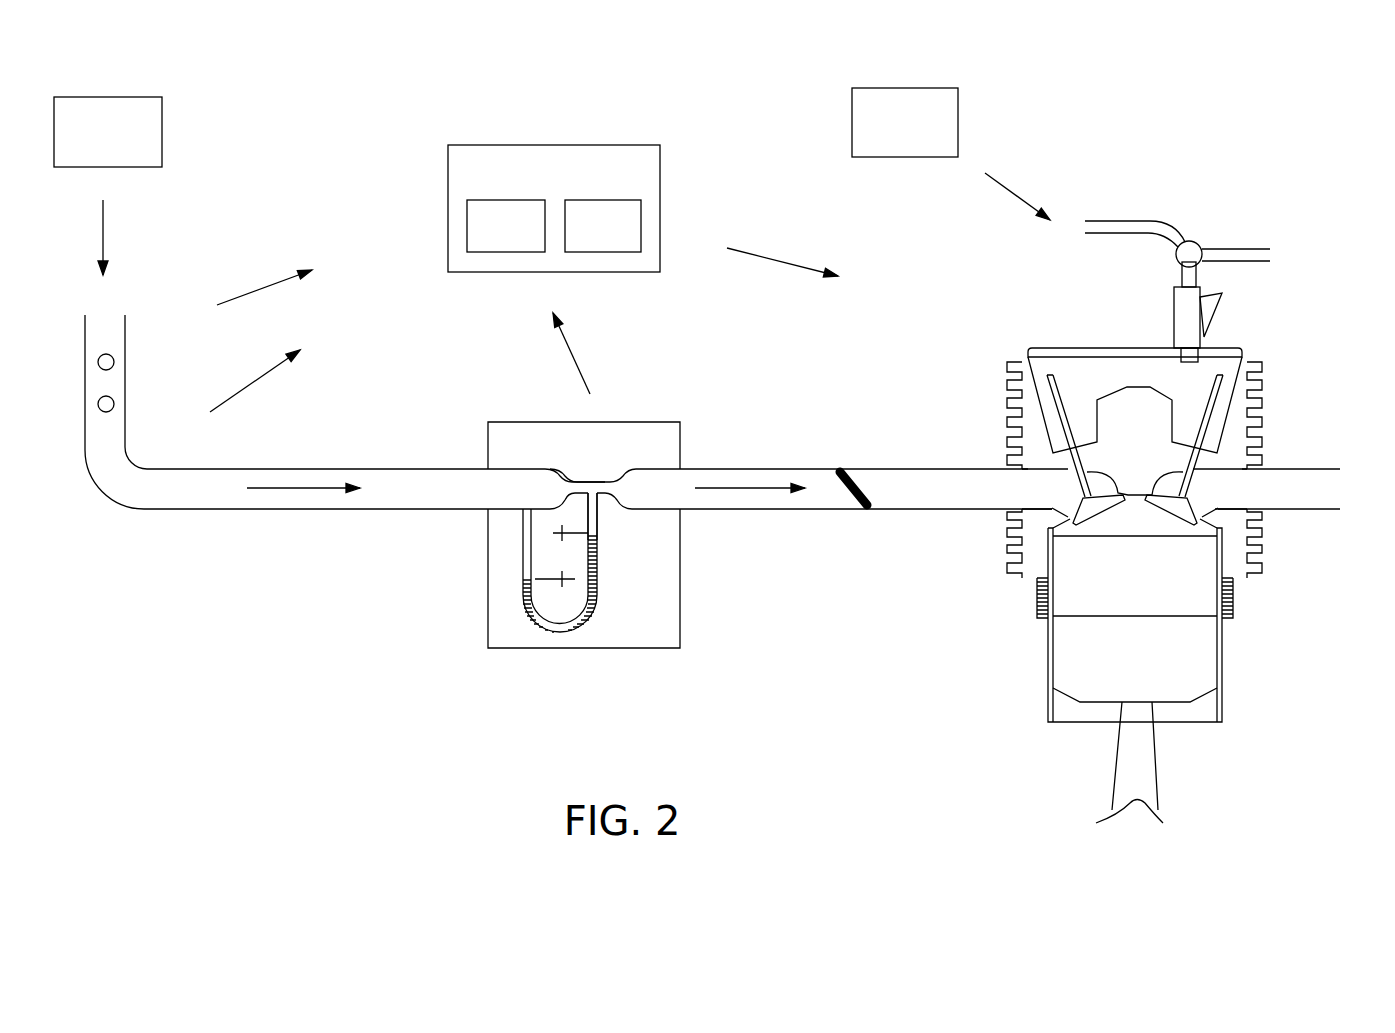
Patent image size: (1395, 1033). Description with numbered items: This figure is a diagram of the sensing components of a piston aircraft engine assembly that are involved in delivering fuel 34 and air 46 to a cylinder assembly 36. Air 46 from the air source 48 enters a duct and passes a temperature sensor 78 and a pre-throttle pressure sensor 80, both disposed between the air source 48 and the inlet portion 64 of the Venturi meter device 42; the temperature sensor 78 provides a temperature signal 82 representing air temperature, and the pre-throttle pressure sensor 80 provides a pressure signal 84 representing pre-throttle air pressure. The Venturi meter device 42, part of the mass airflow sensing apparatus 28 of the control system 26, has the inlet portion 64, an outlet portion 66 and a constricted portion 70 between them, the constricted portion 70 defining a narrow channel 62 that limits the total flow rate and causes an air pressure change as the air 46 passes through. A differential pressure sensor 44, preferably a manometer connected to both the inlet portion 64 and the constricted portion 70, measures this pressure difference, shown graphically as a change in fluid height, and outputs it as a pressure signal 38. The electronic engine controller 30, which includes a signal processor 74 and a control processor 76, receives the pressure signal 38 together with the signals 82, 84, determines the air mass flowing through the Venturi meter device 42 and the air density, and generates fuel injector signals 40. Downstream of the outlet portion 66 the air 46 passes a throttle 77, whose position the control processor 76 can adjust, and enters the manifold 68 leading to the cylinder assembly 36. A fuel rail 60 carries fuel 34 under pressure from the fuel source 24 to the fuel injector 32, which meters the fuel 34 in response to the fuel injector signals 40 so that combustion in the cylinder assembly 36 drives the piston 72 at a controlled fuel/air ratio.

The fuel source 24 is at (890, 138).
The control system 26 is at (385, 165).
The mass airflow sensing apparatus 28 is at (620, 648).
The electronic engine controller 30 is at (535, 189).
The fuel injector 32 is at (1174, 323).
The fuel 34 is at (1005, 188).
The cylinder assembly 36 is at (1176, 585).
The pressure signal 38 is at (568, 345).
The fuel injector signals 40 is at (771, 258).
The Venturi meter device 42 is at (588, 430).
The differential pressure sensor 44 is at (520, 578).
The air 46 is at (103, 222).
The air source 48 is at (90, 149).
The fuel rail 60 is at (1167, 222).
The narrow channel 62 is at (603, 495).
The inlet portion 64 is at (525, 463).
The outlet portion 66 is at (650, 455).
The manifold 68 is at (912, 469).
The constricted portion 70 is at (607, 470).
The piston 72 is at (1119, 670).
The signal processor 74 is at (489, 243).
The control processor 76 is at (586, 243).
The throttle 77 is at (852, 516).
The temperature sensor 78 is at (98, 362).
The pre-throttle pressure sensor 80 is at (98, 404).
The temperature signal 82 is at (262, 290).
The pressure signal 84 is at (250, 385).